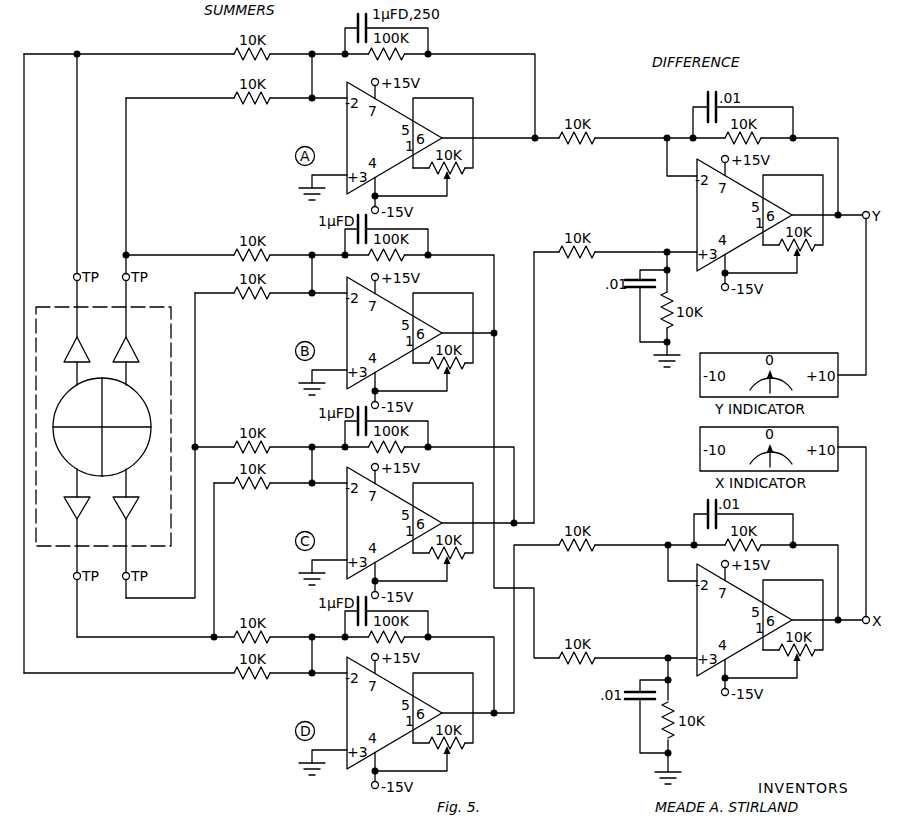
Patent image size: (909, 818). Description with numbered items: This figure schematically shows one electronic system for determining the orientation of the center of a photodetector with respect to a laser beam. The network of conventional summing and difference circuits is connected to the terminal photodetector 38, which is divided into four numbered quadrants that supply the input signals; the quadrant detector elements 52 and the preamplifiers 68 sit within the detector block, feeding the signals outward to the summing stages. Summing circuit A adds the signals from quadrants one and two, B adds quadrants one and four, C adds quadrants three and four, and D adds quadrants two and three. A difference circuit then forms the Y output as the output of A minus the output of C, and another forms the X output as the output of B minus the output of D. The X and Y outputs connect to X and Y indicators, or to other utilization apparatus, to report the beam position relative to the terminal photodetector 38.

The terminal photodetector 38 is at (57, 495).
The detector quadrant elements 52 is at (66, 399).
The preamplifiers 68 is at (70, 348).